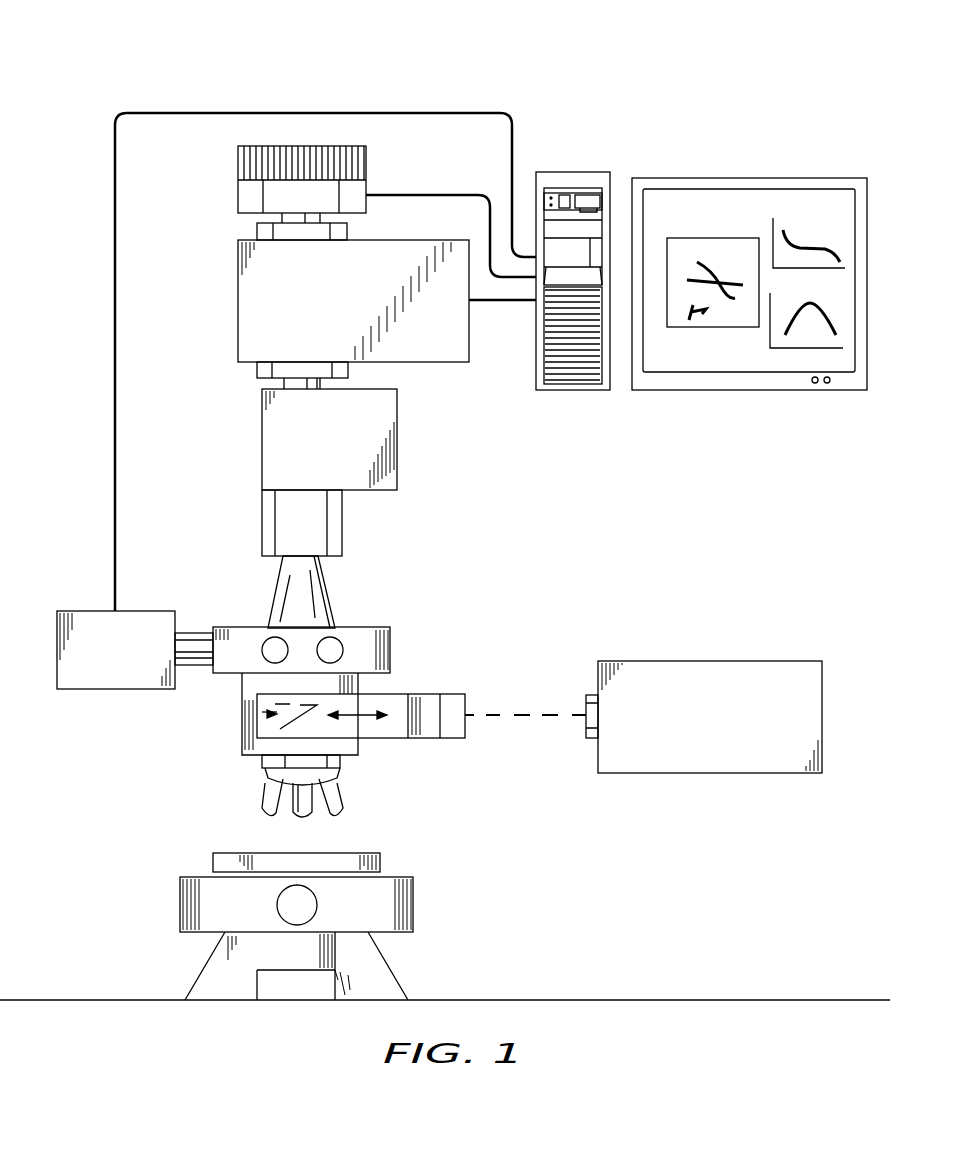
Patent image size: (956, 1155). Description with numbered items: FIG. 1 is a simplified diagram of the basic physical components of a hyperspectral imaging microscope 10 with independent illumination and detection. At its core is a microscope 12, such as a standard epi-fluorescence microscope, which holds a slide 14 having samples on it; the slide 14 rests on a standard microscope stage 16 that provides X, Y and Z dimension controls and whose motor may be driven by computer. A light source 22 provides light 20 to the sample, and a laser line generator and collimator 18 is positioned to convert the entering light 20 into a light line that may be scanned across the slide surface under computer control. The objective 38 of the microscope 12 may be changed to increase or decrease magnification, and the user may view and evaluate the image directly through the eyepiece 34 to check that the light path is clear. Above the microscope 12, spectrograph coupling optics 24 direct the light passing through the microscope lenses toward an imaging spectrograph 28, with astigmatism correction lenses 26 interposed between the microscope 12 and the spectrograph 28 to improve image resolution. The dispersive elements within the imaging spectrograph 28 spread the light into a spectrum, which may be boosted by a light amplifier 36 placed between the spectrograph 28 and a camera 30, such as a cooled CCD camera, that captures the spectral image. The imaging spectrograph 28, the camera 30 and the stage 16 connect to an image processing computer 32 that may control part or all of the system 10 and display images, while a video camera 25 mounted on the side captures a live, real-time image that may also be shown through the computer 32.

The hyperspectral imaging microscope 10 is at (650, 62).
The microscope 12 is at (418, 694).
The slide 14 is at (213, 862).
The microscope stage 16 is at (180, 903).
The laser line generator and collimator 18 is at (262, 712).
The light 20 is at (513, 712).
The light source 22 is at (708, 661).
The spectrograph coupling optics 24 is at (262, 519).
The video camera 25 is at (117, 689).
The astigmatism correction lenses 26 is at (262, 437).
The imaging spectrograph 28 is at (238, 297).
The camera 30 is at (238, 192).
The image processing computer 32 is at (574, 172).
The eyepiece 34 is at (370, 627).
The light amplifier 36 is at (257, 232).
The objective 38 is at (262, 790).